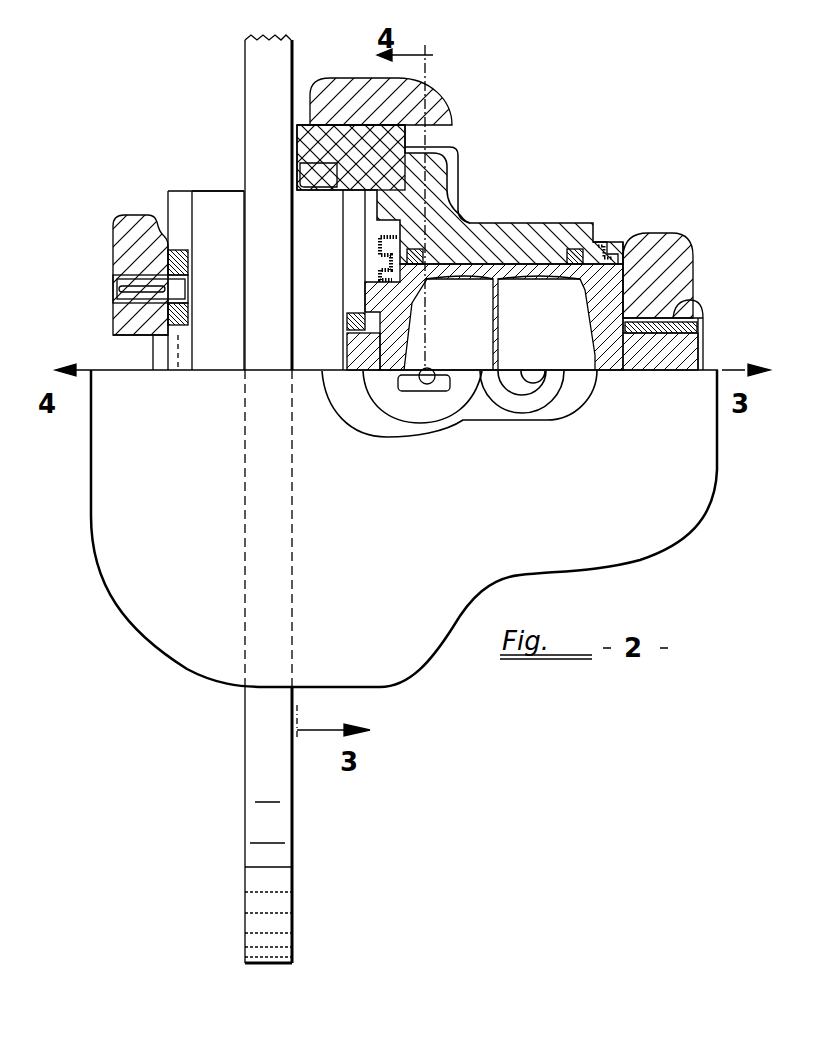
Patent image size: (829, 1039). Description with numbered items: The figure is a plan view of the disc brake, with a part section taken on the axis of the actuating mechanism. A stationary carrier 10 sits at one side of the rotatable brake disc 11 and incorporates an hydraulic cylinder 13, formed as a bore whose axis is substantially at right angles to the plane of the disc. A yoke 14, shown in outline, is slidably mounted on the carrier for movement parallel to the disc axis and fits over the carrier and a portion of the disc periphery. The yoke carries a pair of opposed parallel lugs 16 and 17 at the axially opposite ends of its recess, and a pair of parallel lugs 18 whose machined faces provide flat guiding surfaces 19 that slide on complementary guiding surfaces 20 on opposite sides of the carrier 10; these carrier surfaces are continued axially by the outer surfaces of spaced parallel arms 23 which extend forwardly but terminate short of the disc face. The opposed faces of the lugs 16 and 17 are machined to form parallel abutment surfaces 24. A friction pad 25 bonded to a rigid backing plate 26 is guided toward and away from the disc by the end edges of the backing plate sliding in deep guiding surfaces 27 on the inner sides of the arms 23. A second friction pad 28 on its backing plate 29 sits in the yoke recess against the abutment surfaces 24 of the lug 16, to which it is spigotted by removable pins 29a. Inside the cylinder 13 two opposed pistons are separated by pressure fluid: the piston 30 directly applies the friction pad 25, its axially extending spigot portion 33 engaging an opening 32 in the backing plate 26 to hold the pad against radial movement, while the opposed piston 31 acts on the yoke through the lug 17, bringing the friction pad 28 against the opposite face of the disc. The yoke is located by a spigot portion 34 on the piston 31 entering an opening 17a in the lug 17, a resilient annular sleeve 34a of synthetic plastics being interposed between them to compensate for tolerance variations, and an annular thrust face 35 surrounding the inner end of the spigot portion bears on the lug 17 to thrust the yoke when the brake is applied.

The carrier 10 is at (528, 237).
The brake disc 11 is at (283, 776).
The hydraulic cylinder 13 is at (550, 258).
The yoke 14 is at (195, 647).
The lug 16 is at (118, 250).
The lug 17 is at (675, 278).
The opening 17a is at (697, 303).
The lugs 18 is at (337, 90).
The guiding surfaces 19 is at (310, 120).
The guiding surfaces 20 is at (338, 125).
The arms 23 is at (327, 173).
The abutment surfaces 24 is at (167, 266).
The friction pad 25 is at (325, 215).
The backing plate 26 is at (353, 225).
The guiding surfaces 27 is at (302, 184).
The friction pad 28 is at (217, 350).
The backing plate 29 is at (178, 371).
The removable pins 29a is at (133, 297).
The piston 30 is at (383, 337).
The piston 31 is at (610, 357).
The opening 32 is at (347, 313).
The spigot portion 33 is at (352, 352).
The spigot portion 34 is at (672, 360).
The resilient annular sleeve 34a is at (698, 328).
The annular thrust face 35 is at (640, 290).